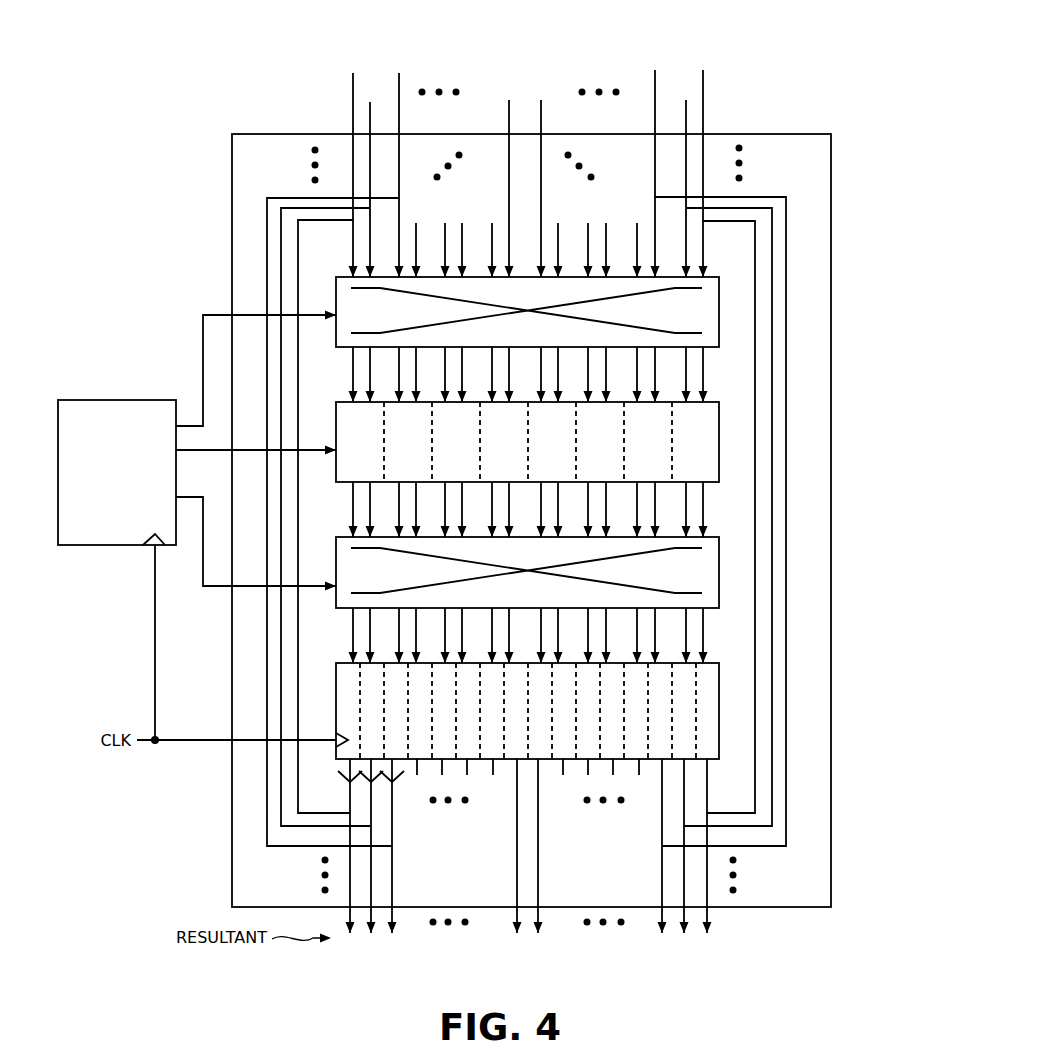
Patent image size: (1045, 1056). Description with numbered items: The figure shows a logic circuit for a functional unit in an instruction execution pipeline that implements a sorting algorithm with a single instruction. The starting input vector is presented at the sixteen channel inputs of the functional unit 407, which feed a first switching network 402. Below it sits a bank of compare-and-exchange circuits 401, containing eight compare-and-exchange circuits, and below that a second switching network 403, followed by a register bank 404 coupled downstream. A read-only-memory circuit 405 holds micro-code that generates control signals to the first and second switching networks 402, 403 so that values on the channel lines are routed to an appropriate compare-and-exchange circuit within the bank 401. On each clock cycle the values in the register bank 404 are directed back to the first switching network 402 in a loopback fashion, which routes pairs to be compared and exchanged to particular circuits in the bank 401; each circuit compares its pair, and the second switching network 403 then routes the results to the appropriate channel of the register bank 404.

The compare-and-exchange circuit bank 401 is at (607, 442).
The first switching network 402 is at (719, 309).
The second switching network 403 is at (719, 566).
The register bank 404 is at (719, 706).
The read-only-memory (ROM) circuit 405 is at (197, 451).
The functional unit inputs 407 is at (597, 150).